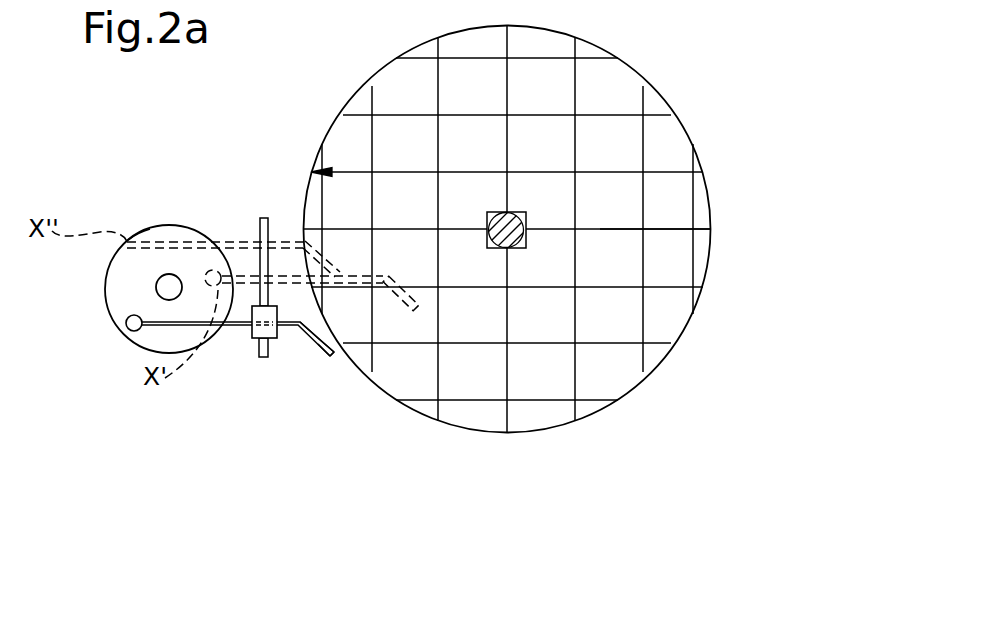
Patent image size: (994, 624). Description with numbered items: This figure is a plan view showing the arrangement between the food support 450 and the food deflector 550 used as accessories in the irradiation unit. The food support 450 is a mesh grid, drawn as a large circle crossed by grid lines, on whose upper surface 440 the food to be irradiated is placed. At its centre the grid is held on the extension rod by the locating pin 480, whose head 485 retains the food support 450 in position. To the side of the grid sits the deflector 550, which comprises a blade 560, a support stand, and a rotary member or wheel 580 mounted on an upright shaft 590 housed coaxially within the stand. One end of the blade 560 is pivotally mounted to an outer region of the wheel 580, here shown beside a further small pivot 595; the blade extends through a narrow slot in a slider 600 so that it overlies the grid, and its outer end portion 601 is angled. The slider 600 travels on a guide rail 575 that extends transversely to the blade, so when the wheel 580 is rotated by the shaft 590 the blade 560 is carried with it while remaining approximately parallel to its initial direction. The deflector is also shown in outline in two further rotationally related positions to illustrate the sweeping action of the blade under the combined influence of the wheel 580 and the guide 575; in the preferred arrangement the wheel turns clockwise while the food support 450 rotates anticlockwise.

The upper surface 440 is at (417, 372).
The food support 450 is at (703, 173).
The locating pin 480 is at (526, 212).
The head 485 is at (709, 230).
The food deflector 550 is at (208, 236).
The blade 560 is at (337, 341).
The guide rail 575 is at (265, 218).
The wheel 580 is at (152, 230).
The upright shaft 590 is at (156, 287).
The pivot pin 595 is at (130, 337).
The slider 600 is at (250, 336).
The outer end portion 601 is at (312, 338).